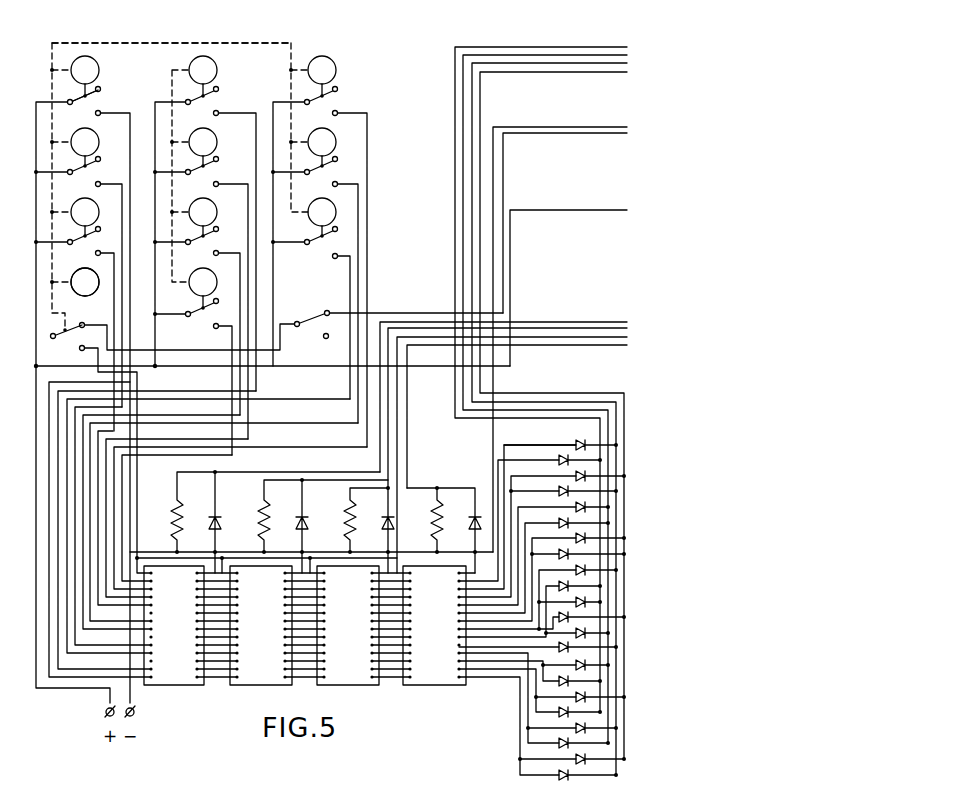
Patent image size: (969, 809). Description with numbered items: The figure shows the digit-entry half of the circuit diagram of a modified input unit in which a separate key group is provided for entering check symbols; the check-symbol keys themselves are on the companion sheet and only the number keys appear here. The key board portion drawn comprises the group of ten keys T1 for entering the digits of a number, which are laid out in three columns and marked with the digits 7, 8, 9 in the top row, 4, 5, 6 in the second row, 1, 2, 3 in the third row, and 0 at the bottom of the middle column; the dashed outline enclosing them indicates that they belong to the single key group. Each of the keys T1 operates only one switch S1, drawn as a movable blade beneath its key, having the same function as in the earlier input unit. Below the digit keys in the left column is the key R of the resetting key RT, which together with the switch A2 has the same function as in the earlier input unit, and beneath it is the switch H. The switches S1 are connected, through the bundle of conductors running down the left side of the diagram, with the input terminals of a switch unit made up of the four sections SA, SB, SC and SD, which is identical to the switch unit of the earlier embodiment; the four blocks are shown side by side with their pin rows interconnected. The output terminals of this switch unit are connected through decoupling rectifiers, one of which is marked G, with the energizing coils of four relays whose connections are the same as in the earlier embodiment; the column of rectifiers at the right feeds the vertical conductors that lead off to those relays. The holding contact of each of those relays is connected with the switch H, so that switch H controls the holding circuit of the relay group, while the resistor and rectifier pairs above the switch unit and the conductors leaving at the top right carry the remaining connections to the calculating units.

The digit key zero 0 is at (203, 282).
The digit key one 1 is at (85, 212).
The digit key two 2 is at (203, 212).
The digit key three 3 is at (322, 212).
The digit key four 4 is at (85, 142).
The digit key five 5 is at (203, 142).
The digit key six 6 is at (322, 142).
The digit key seven 7 is at (85, 70).
The digit key eight 8 is at (203, 70).
The digit key nine 9 is at (322, 70).
The resetting key button R is at (85, 282).
The digit keys T1 is at (104, 60).
The key switch S1 is at (93, 95).
The resetting key RT is at (96, 292).
The holding switch H is at (68, 338).
The switch A2 is at (314, 318).
The decoupling rectifier G is at (576, 441).
The switch unit section A SA is at (174, 625).
The switch unit section B SB is at (261, 625).
The switch unit section C SC is at (348, 625).
The switch unit section D SD is at (434, 625).